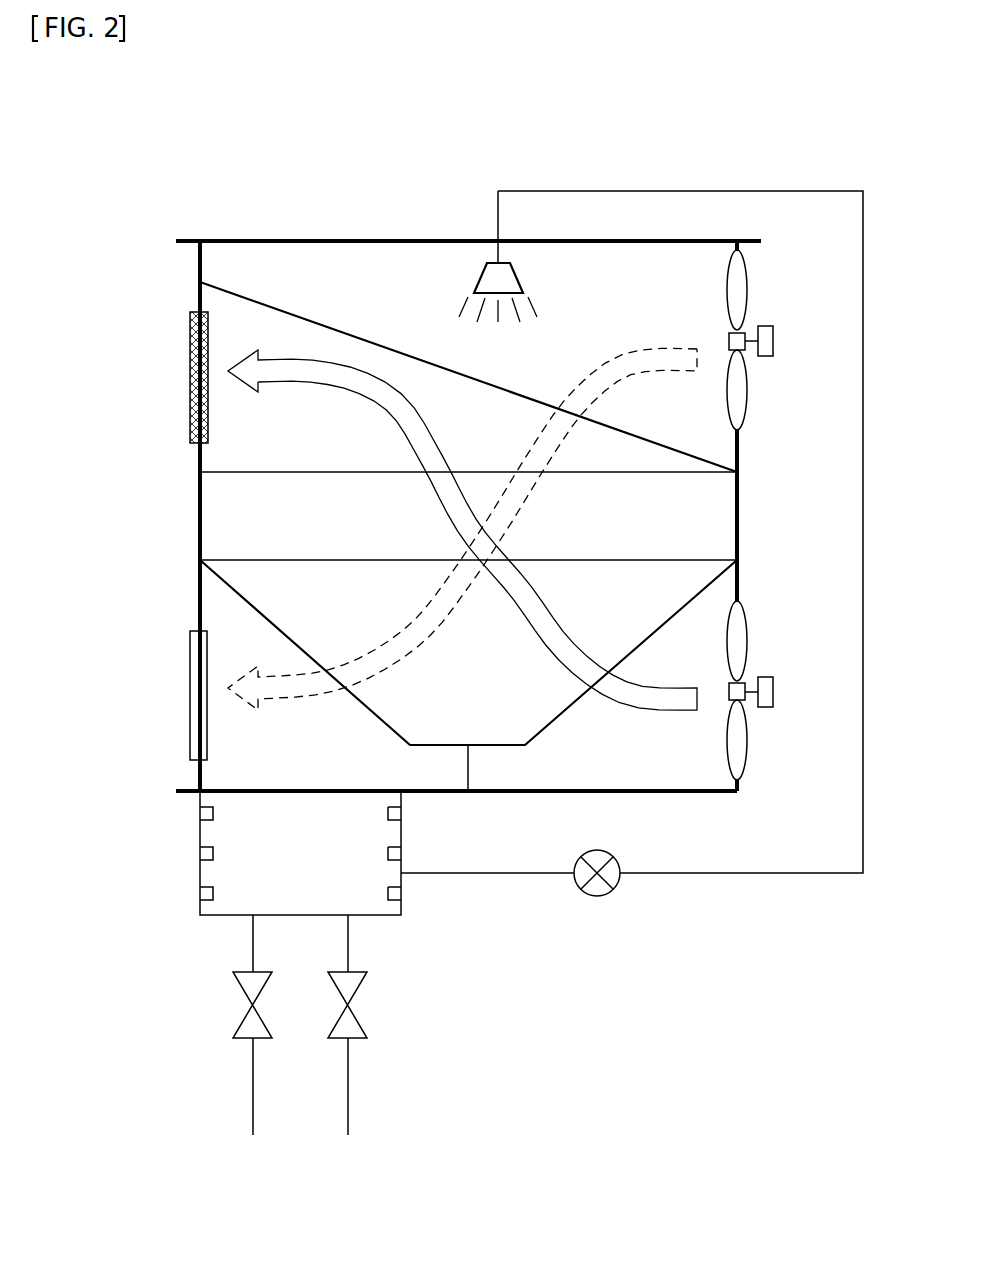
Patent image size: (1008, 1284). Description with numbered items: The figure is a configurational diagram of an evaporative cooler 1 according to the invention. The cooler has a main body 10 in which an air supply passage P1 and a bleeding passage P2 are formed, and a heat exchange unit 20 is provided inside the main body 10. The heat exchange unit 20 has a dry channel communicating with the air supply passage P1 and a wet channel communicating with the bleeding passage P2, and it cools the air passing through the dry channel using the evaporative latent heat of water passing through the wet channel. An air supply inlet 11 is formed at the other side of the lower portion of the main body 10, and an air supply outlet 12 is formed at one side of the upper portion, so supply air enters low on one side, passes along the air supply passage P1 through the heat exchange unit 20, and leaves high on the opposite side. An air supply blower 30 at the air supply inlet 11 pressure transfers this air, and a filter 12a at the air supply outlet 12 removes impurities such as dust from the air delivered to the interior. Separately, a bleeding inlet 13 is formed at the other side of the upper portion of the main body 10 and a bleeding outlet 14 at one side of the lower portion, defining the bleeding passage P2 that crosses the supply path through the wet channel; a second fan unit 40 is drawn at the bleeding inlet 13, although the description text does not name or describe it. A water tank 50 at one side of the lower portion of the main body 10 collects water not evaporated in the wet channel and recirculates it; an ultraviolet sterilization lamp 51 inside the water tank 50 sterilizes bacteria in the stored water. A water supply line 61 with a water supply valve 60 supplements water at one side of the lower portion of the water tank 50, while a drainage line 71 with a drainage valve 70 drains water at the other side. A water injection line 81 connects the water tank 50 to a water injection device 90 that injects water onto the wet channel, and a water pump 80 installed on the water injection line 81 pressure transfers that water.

The evaporative cooler 1 is at (208, 156).
The main body 10 is at (285, 240).
The air supply inlet 11 is at (712, 698).
The air supply outlet 12 is at (190, 345).
The filter 12a is at (190, 406).
The bleeding inlet 13 is at (710, 322).
The bleeding outlet 14 is at (190, 698).
The heat exchange unit 20 is at (332, 528).
The air supply blower 30 is at (745, 641).
The second fan 40 is at (745, 290).
The water tank 50 is at (285, 863).
The ultraviolet sterilization lamp 51 is at (200, 893).
The water supply valve 60 is at (248, 1028).
The water supply line 61 is at (252, 943).
The drainage valve 70 is at (362, 1026).
The drainage line 71 is at (349, 944).
The water pump 80 is at (598, 897).
The water injection line 81 is at (728, 875).
The water injection device 90 is at (523, 276).
The air supply passage P1 is at (408, 423).
The bleeding passage P2 is at (422, 625).